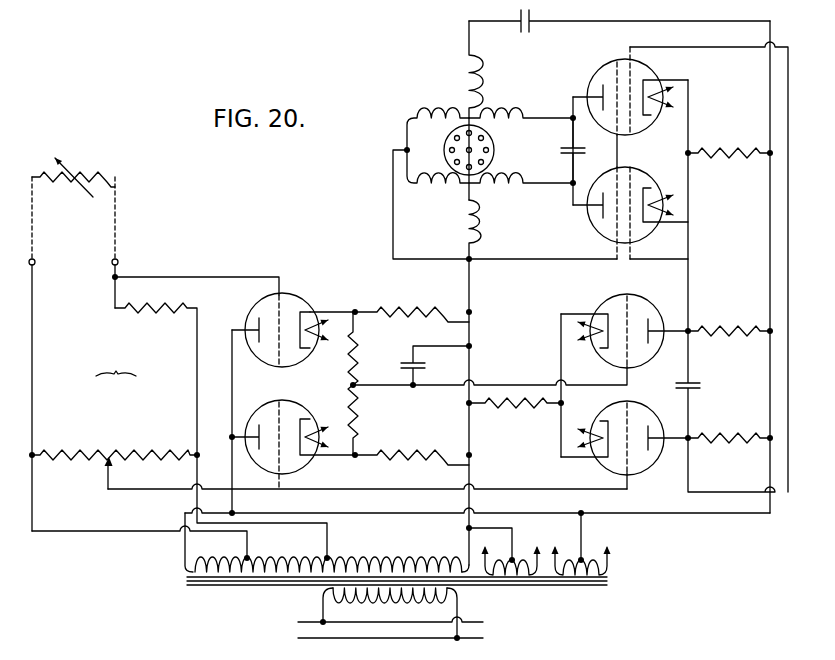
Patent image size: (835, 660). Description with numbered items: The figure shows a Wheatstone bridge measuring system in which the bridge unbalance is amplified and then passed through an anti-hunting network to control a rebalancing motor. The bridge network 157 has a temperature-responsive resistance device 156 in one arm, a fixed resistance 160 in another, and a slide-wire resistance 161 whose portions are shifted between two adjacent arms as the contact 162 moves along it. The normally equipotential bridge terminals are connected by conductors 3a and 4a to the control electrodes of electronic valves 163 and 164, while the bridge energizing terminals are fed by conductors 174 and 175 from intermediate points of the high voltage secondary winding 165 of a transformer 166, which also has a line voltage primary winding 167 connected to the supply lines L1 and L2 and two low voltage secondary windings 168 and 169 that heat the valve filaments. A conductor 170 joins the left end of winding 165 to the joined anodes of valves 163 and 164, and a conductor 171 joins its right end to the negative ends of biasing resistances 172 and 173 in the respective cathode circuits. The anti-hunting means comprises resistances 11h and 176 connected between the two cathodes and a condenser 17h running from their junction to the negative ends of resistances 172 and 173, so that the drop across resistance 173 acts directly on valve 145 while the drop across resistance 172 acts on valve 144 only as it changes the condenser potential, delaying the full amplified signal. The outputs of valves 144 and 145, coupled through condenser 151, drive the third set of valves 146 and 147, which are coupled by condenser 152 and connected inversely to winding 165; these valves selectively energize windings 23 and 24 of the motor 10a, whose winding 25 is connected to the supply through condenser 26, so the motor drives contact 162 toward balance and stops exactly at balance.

The device 156 is at (75, 176).
The conductor 3a is at (184, 278).
The resistance 160 is at (162, 312).
The bridge network 157 is at (116, 362).
The resistance 161 is at (156, 451).
The contact 162 is at (103, 462).
The conductor 4a is at (147, 472).
The conductor 174 is at (148, 531).
The conductor 175 is at (299, 525).
The electronic valve 163 is at (295, 295).
The electronic valve 164 is at (295, 476).
The biasing resistance 172 is at (405, 310).
The biasing resistance 173 is at (414, 452).
The resistance 11h is at (351, 376).
The resistance 176 is at (358, 405).
The condenser 17h is at (402, 366).
The conductor 170 is at (410, 512).
The conductor 171 is at (472, 498).
The high voltage secondary winding 165 is at (393, 558).
The transformer 166 is at (548, 588).
The line voltage primary winding 167 is at (391, 602).
The supply line L1 is at (463, 622).
The supply line L2 is at (465, 644).
The low voltage secondary winding 168 is at (521, 554).
The low voltage secondary winding 169 is at (588, 554).
The condenser 26 is at (525, 32).
The winding 25 is at (456, 78).
The winding 23 is at (432, 112).
The winding 24 is at (442, 191).
The motor 10a is at (490, 140).
The condenser 152 is at (560, 152).
The valve 146 is at (602, 71).
The valve 147 is at (599, 239).
The valve 144 is at (604, 302).
The valve 145 is at (609, 470).
The condenser 151 is at (701, 385).